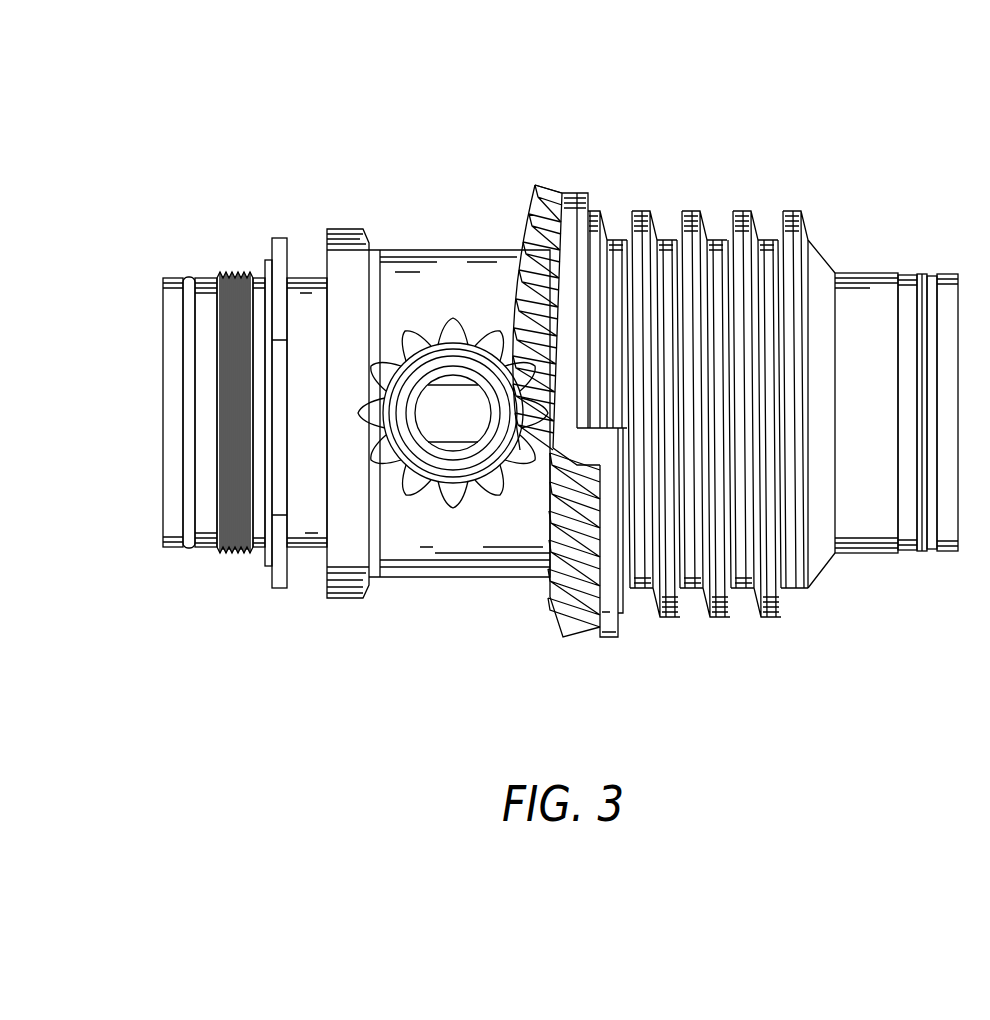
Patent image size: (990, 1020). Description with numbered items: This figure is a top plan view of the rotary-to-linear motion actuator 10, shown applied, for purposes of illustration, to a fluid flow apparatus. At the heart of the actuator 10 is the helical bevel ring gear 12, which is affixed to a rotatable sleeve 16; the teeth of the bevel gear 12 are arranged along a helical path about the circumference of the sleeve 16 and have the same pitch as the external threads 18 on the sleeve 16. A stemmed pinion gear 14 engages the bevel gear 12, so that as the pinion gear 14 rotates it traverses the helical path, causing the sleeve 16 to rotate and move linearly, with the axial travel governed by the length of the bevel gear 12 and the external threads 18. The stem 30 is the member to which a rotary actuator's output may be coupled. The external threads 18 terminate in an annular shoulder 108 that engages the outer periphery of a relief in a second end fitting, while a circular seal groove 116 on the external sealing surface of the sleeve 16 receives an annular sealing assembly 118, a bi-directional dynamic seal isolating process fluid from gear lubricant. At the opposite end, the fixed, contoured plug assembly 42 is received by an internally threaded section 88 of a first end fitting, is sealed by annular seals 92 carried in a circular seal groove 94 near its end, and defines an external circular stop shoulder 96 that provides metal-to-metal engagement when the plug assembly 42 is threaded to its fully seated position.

The rotary-to-linear motion actuator 10 is at (287, 113).
The helical bevel ring gear 12 is at (548, 190).
The stemmed pinion gear 14 is at (453, 498).
The rotatable sleeve 16 is at (441, 290).
The external threads 18 is at (692, 213).
The stem 30 is at (463, 413).
The plug assembly 42 is at (205, 540).
The internally threaded section 88 is at (237, 275).
The annular seals 92 is at (190, 283).
The circular seal groove 94 is at (184, 546).
The stop shoulder 96 is at (280, 578).
The annular shoulder 108 is at (615, 623).
The circular seal groove 116 is at (932, 278).
The annular sealing assembly 118 is at (913, 560).